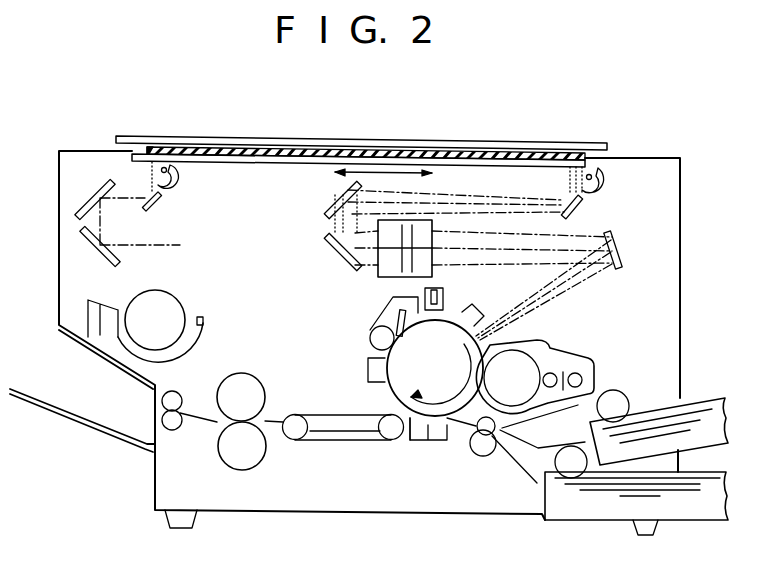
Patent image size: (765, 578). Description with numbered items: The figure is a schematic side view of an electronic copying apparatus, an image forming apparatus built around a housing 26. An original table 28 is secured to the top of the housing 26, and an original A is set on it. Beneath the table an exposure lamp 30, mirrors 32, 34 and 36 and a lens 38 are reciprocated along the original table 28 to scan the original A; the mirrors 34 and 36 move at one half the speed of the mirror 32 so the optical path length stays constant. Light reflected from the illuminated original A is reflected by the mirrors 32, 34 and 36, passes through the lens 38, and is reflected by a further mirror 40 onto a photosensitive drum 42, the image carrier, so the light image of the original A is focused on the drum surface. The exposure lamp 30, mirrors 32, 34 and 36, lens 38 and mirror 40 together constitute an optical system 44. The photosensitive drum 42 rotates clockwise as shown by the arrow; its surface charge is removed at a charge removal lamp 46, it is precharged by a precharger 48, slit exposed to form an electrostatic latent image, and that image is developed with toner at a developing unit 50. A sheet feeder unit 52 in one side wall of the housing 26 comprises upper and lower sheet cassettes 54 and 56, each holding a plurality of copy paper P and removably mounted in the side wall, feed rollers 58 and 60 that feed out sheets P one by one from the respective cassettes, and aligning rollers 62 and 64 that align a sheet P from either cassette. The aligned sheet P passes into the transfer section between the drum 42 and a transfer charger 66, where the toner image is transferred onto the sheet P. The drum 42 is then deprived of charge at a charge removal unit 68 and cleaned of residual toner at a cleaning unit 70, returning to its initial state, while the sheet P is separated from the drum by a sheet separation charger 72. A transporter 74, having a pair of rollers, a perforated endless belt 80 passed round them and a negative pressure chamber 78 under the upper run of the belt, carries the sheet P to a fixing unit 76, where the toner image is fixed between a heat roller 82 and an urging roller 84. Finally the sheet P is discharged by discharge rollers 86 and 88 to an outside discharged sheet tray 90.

The housing 26 is at (683, 190).
The original table 28 is at (576, 150).
The exposure lamp 30 is at (604, 175).
The mirror 32 is at (582, 212).
The mirror 34 is at (328, 198).
The mirror 36 is at (330, 262).
The lens 38 is at (386, 279).
The mirror 40 is at (622, 252).
The photosensitive drum 42 is at (396, 393).
The optical system 44 is at (598, 284).
The charge removal lamp 46 is at (447, 298).
The precharger 48 is at (486, 302).
The developing unit 50 is at (536, 346).
The sheet feeder unit 52 is at (652, 406).
The sheet cassette 54 is at (694, 416).
The sheet cassette 56 is at (698, 516).
The feed roller 58 is at (616, 390).
The feed roller 60 is at (570, 448).
The aligning roller 62 is at (476, 452).
The aligning roller 64 is at (493, 440).
The transfer charger 66 is at (433, 443).
The charge removal unit 68 is at (365, 368).
The cleaning unit 70 is at (368, 336).
The sheet separation charger 72 is at (408, 443).
The transporter 74 is at (330, 410).
The fixing unit 76 is at (236, 372).
The negative pressure chamber 78 is at (304, 443).
The perforated endless belt 80 is at (340, 443).
The heat roller 82 is at (252, 394).
The urging roller 84 is at (252, 471).
The discharge roller 86 is at (174, 431).
The discharge roller 88 is at (178, 393).
The discharged sheet tray 90 is at (94, 438).
The original A is at (302, 134).
The copy paper P is at (718, 398).